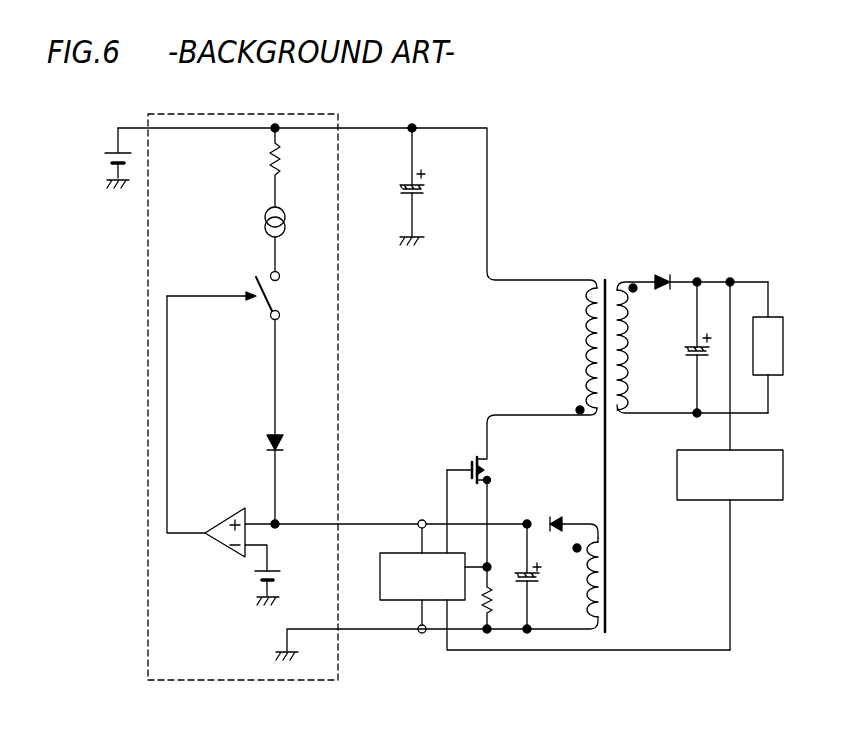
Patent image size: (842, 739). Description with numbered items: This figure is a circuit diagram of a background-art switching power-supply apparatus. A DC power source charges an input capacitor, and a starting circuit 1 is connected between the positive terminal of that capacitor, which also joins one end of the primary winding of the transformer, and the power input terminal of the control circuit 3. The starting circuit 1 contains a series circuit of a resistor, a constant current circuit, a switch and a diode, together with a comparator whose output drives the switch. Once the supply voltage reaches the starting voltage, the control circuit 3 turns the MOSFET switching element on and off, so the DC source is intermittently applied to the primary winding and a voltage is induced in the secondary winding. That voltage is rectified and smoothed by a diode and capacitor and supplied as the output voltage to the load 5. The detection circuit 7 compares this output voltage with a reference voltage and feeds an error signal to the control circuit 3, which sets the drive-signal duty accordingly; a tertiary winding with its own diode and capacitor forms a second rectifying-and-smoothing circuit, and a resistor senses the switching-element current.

The starting circuit 1 is at (261, 114).
The control circuit 3 is at (379, 571).
The load 5 is at (783, 343).
The detection circuit 7 is at (677, 466).